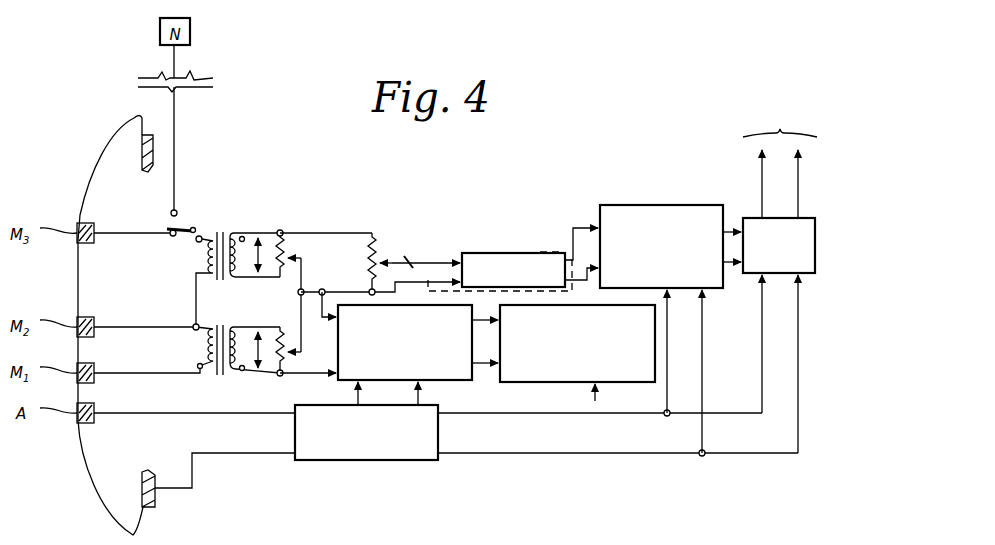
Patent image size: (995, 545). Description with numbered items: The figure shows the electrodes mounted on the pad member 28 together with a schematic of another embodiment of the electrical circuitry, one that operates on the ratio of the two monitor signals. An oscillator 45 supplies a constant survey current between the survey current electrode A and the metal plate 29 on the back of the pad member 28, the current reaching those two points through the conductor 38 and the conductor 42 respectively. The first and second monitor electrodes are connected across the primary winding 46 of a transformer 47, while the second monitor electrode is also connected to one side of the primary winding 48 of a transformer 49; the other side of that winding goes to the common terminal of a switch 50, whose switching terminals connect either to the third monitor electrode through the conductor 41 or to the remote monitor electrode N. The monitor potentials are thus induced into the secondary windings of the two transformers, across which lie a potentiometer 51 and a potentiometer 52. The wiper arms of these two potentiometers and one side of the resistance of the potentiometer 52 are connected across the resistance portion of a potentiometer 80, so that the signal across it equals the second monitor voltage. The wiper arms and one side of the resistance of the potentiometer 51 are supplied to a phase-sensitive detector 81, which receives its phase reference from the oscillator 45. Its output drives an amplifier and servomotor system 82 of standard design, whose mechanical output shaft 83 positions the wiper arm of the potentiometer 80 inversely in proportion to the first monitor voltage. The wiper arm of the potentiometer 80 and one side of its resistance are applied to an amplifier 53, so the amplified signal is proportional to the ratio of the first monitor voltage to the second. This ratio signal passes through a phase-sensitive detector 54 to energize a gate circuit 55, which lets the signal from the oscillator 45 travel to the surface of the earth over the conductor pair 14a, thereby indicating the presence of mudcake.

The pad member 28 is at (87, 168).
The conductor 41 is at (117, 231).
The switch 50 is at (185, 226).
The transformer 49 is at (208, 255).
The primary winding 48 is at (207, 250).
The transformer 47 is at (187, 333).
The primary winding 46 is at (207, 349).
The potentiometer 52 is at (290, 234).
The potentiometer 51 is at (297, 333).
The potentiometer 80 is at (372, 262).
The mechanical output shaft 83 is at (422, 272).
The amplifier 53 is at (510, 252).
The phase-sensitive detector 54 is at (663, 205).
The gate circuit 55 is at (745, 218).
The conductor pair 14a is at (798, 176).
The phase-sensitive detector 81 is at (444, 380).
The amplifier and servomotor system 82 is at (500, 381).
The conductor 38 is at (127, 415).
The conductor 42 is at (230, 454).
The oscillator 45 is at (396, 461).
The metal plate 29 is at (156, 507).